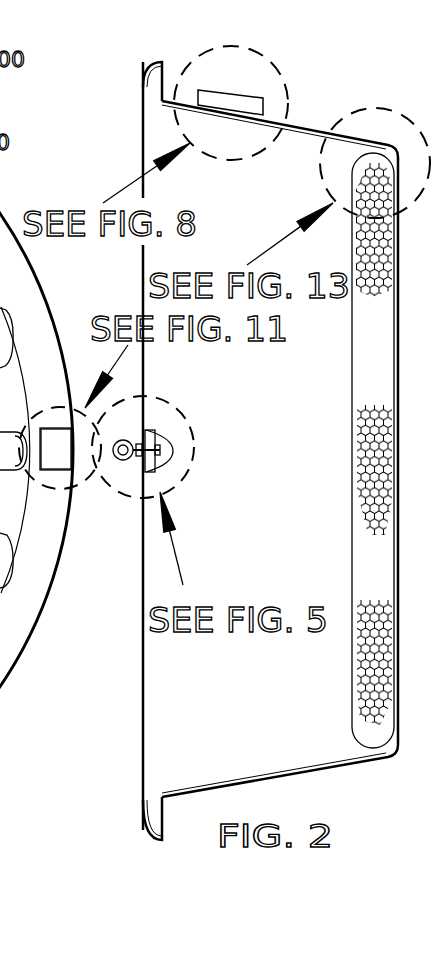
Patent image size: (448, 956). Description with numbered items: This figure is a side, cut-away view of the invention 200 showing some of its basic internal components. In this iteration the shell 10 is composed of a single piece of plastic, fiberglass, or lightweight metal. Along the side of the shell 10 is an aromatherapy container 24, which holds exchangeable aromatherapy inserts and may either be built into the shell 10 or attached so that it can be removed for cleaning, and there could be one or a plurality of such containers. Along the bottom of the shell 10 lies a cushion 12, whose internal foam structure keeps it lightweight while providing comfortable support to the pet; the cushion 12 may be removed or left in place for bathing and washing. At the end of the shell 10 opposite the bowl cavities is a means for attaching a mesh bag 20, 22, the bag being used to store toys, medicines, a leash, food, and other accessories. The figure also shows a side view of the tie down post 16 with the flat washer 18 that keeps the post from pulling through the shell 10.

The shell 10 is at (142, 668).
The cushion 12 is at (352, 512).
The tie down post 16 is at (121, 461).
The flat washer 18 is at (148, 432).
The means for attaching a mesh bag 20 is at (55, 456).
The means for attaching a mesh bag 22 is at (56, 449).
The aromatherapy container 24 is at (243, 102).
The invention 200 is at (263, 442).